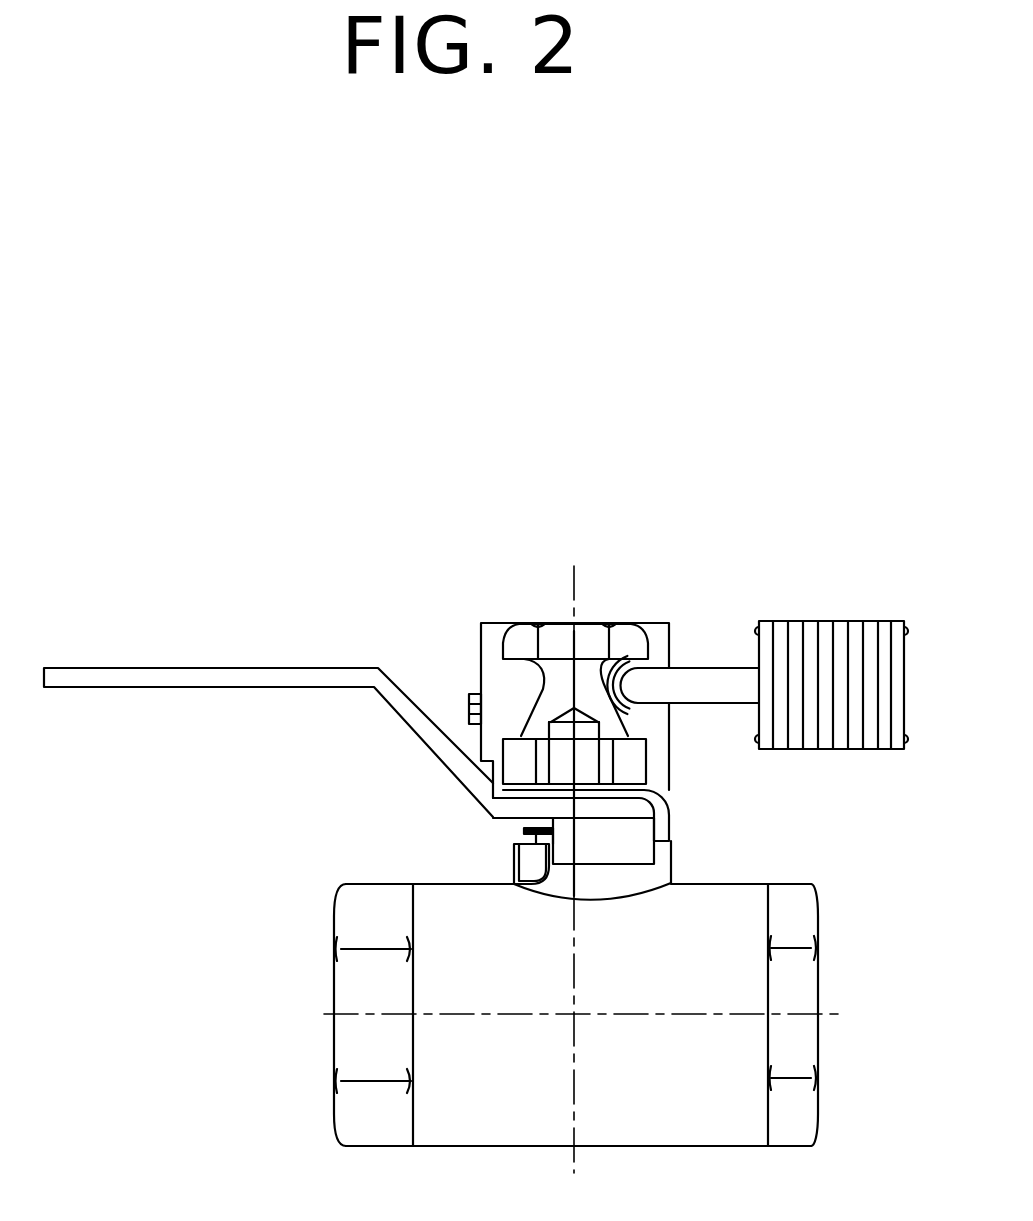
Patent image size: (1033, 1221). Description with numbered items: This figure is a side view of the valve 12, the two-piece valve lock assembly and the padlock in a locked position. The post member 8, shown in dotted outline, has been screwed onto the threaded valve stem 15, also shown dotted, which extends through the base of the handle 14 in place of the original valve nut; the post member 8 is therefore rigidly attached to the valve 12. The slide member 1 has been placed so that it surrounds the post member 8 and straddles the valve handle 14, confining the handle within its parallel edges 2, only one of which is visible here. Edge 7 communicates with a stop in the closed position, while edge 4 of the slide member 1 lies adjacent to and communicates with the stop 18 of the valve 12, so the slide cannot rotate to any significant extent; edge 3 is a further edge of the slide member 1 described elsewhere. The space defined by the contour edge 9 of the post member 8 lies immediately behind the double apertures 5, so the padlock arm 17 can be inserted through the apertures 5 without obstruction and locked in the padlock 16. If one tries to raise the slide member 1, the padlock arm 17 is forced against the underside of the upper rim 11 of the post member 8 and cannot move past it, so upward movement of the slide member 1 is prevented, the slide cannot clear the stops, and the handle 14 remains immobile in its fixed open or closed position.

The slide member 1 is at (479, 628).
The edge 2 is at (485, 813).
The edge 3 is at (506, 865).
The edge 4 is at (655, 853).
The apertures 5 is at (648, 655).
The edge 7 is at (553, 835).
The post member 8 is at (577, 672).
The contour edge 9 is at (520, 718).
The upper rim 11 is at (500, 643).
The valve 12 is at (333, 960).
The handle 14 is at (270, 686).
The threaded valve stem 15 is at (610, 728).
The padlock 16 is at (807, 615).
The padlock arm 17 is at (718, 663).
The stop 18 is at (665, 812).